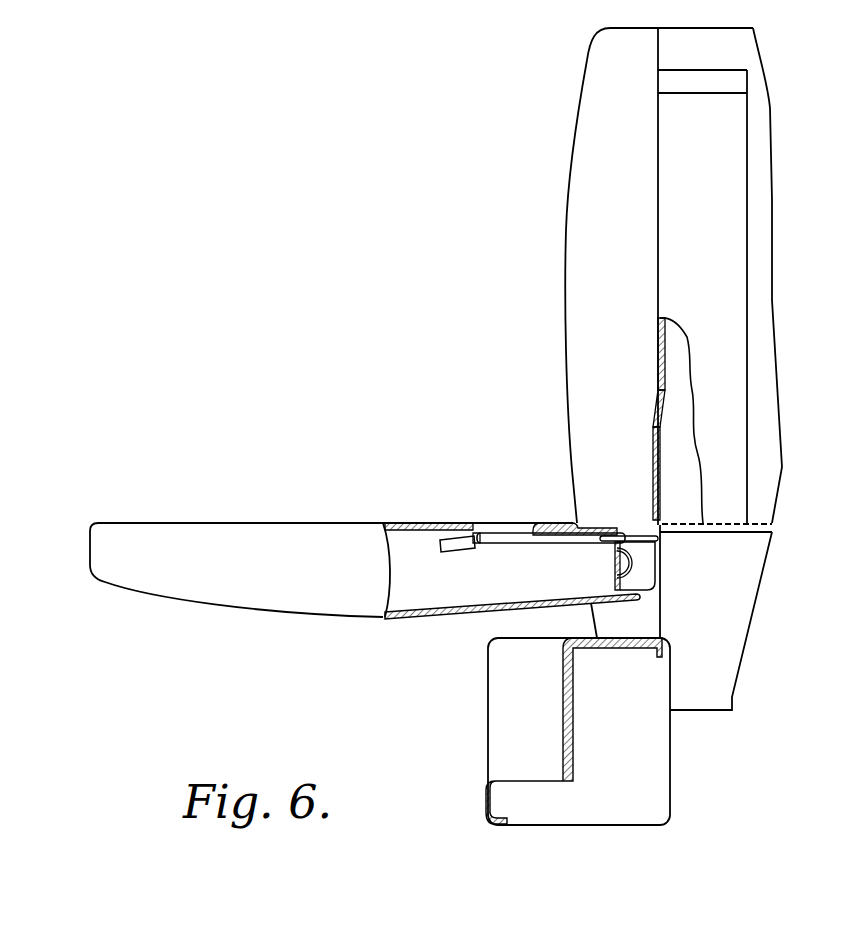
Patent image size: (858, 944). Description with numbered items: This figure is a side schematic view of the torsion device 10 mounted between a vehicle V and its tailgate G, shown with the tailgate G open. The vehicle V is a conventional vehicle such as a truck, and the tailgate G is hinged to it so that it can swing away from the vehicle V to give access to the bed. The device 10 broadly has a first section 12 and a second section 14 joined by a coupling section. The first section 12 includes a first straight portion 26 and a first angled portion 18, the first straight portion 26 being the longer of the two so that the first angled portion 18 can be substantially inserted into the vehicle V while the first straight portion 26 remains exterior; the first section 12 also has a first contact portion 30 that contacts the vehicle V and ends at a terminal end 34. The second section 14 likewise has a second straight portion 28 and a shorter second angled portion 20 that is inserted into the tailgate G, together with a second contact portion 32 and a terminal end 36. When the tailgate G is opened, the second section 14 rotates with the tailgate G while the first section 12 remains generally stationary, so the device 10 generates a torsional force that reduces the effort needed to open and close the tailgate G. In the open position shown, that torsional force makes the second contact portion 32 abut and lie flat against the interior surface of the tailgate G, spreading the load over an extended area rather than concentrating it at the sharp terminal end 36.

The vehicle V is at (720, 167).
The tailgate G is at (243, 540).
The torsion device 10 is at (496, 517).
The first section 12 is at (592, 419).
The second section 14 is at (567, 572).
The first angled portion 18 is at (658, 415).
The second angled portion 20 is at (460, 548).
The first straight portion 26 is at (657, 482).
The second straight portion 28 is at (590, 537).
The first contact portion 30 is at (667, 357).
The second contact portion 32 is at (527, 537).
The terminal end 34 is at (673, 322).
The terminal end 36 is at (440, 545).